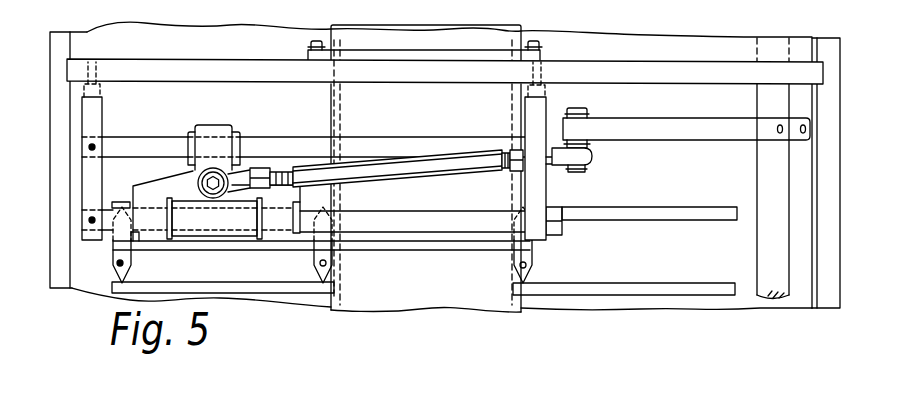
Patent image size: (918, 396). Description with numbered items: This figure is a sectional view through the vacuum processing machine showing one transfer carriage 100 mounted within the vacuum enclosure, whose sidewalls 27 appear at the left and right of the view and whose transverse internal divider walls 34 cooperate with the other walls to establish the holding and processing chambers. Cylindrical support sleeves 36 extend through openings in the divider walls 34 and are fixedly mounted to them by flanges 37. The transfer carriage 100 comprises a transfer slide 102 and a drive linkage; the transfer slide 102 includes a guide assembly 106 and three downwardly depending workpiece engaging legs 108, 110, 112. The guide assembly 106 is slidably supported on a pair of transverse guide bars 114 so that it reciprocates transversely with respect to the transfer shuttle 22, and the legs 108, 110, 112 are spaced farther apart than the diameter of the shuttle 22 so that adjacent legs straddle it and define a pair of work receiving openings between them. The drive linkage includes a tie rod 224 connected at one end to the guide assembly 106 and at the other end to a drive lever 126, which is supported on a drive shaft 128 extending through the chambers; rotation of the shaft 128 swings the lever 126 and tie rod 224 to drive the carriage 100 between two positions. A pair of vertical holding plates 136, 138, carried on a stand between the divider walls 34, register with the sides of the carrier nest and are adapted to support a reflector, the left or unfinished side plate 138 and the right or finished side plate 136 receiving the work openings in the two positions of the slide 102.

The transfer shuttle 22 is at (336, 308).
The sidewalls 27 is at (57, 212).
The transverse internal divider walls 34 is at (142, 68).
The cylindrical support sleeves 36 is at (333, 95).
The flanges 37 is at (307, 42).
The transfer carriage 100 is at (213, 117).
The transfer slide 102 is at (155, 176).
The guide assembly 106 is at (153, 235).
The workpiece engaging leg 108 is at (113, 260).
The workpiece engaging leg 110 is at (313, 263).
The workpiece engaging leg 112 is at (530, 265).
The transverse guide bars 114 is at (278, 147).
The drive lever 126 is at (657, 132).
The drive shaft 128 is at (763, 239).
The vertical holding plate 136 is at (613, 288).
The vertical holding plate 138 is at (207, 288).
The link rod 224 is at (437, 167).